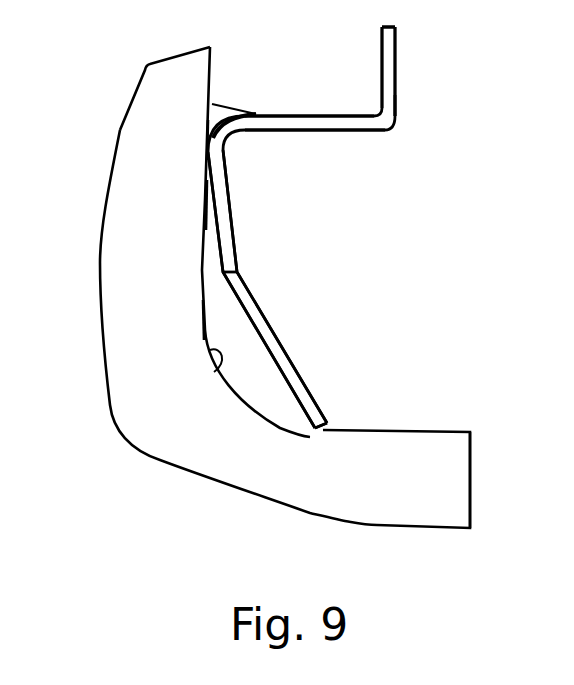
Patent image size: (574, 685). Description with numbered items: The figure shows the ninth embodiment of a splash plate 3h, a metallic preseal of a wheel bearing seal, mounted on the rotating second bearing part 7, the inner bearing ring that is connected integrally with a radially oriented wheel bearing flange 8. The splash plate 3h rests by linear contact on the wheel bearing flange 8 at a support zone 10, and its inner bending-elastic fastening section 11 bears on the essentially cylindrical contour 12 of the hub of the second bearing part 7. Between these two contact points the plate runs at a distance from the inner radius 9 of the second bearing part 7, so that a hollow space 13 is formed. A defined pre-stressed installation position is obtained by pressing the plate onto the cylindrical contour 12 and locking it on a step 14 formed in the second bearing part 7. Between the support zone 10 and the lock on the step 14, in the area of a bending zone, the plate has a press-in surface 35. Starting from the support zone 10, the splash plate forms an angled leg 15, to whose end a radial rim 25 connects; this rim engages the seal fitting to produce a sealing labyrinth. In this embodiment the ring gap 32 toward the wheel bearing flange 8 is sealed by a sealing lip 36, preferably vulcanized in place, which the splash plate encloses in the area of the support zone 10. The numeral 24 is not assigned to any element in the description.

The wheel bearing flange 8 is at (140, 95).
The support zone 10 is at (207, 153).
The ring gap 32 is at (205, 213).
The fastening section 11 is at (222, 278).
The hollow space 13 is at (207, 327).
The inner radius 9 is at (212, 350).
The sealing lip 36 is at (216, 104).
The angled leg 15 is at (362, 115).
The clip 24 is at (309, 105).
The radial rim 25 is at (398, 72).
The splash plate 3h is at (400, 107).
The press-in surface 35 is at (235, 273).
The step 14 is at (320, 437).
The second bearing part 7 is at (358, 510).
The cylindrical contour 12 is at (442, 432).